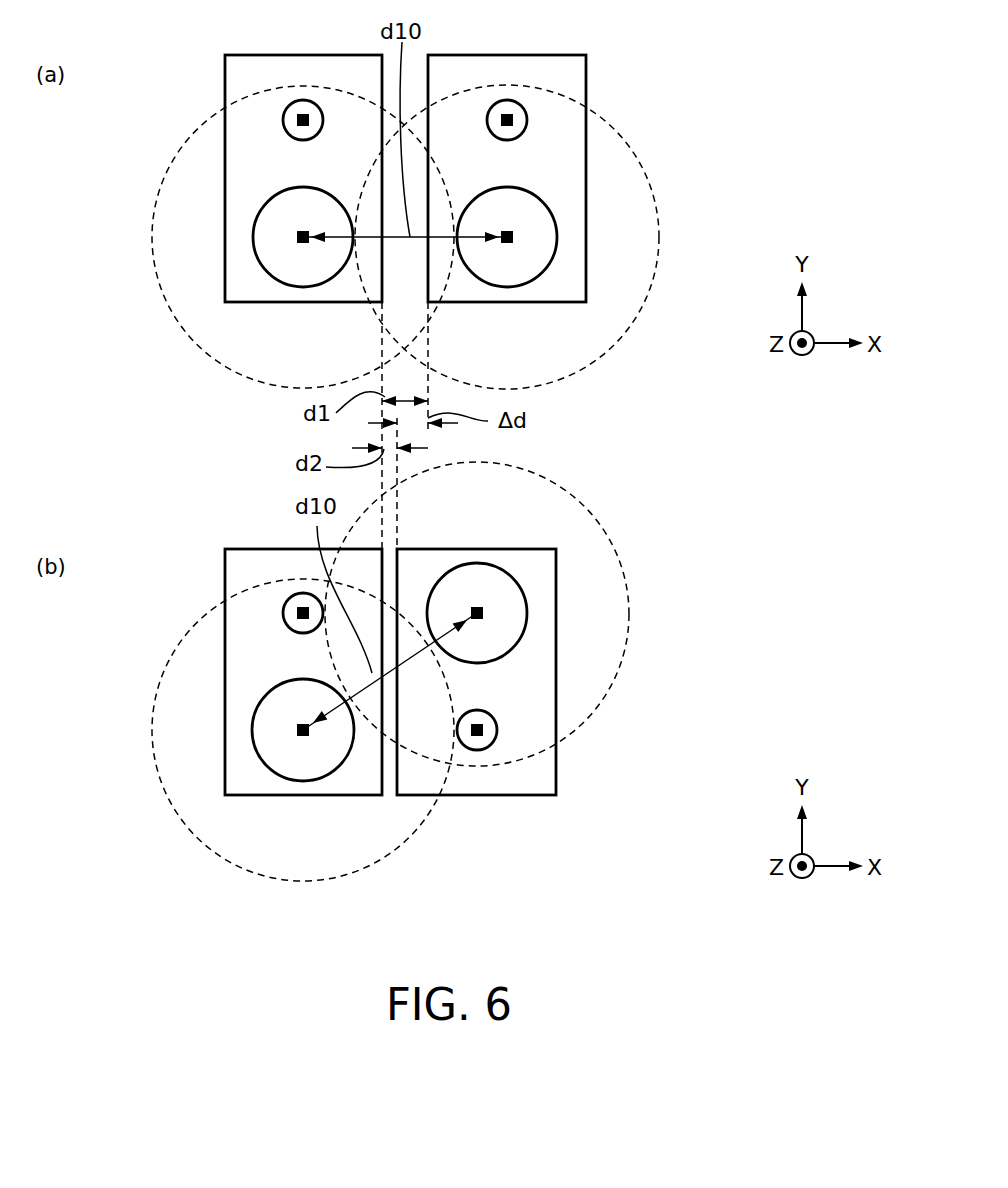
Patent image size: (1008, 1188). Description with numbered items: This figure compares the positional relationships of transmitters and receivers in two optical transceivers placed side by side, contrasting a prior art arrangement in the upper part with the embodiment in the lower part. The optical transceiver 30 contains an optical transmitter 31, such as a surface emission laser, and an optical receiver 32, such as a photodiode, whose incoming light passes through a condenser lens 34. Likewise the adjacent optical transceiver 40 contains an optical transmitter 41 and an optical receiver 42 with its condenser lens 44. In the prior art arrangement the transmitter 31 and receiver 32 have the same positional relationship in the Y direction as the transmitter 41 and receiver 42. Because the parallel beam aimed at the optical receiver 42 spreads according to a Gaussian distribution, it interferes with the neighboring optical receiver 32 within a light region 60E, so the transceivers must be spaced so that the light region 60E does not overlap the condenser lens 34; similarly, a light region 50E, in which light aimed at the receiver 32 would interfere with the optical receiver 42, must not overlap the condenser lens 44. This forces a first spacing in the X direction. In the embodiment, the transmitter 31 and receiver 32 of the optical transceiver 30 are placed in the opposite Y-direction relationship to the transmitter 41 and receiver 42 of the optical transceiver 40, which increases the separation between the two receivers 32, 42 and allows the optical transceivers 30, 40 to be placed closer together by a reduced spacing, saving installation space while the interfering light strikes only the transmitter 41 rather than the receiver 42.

The optical transceiver 30 is at (586, 82).
The optical transmitter 31 is at (507, 120).
The optical receiver 32 is at (510, 239).
The condenser lens 34 is at (557, 237).
The optical transceiver 40 is at (225, 82).
The optical transmitter 41 is at (303, 120).
The optical receiver 42 is at (303, 237).
The condenser lens 44 is at (258, 216).
The light region 50E is at (659, 230).
The light region 60E is at (152, 216).